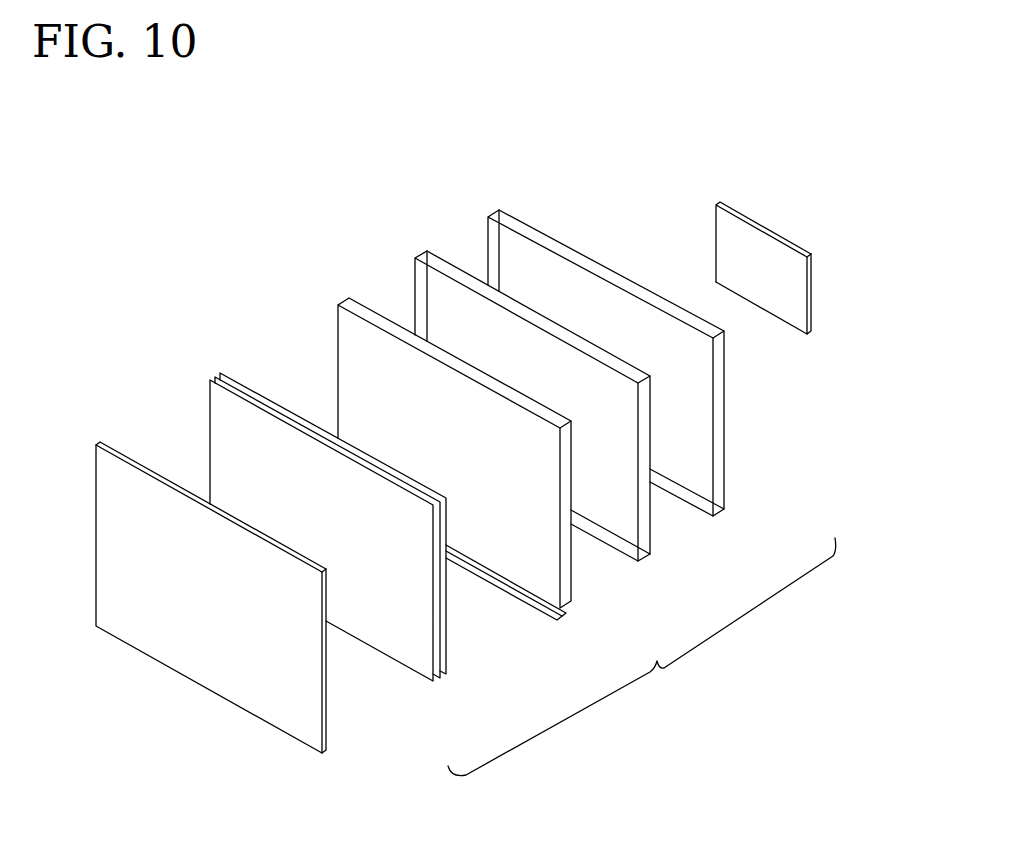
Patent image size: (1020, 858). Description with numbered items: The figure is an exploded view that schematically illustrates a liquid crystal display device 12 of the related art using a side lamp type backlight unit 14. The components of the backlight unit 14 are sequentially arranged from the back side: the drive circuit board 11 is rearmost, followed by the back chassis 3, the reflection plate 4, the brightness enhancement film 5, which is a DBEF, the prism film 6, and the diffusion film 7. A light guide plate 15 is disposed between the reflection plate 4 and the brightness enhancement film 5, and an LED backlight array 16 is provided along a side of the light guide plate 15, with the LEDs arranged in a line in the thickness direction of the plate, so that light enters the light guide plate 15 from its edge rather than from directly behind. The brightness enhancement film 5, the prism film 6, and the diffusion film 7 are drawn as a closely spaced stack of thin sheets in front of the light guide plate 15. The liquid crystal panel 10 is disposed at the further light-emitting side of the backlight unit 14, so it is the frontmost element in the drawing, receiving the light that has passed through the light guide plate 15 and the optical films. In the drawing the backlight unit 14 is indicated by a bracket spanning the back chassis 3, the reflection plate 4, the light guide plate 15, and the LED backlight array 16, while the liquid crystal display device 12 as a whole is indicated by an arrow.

The liquid crystal display device 12 is at (356, 232).
The liquid crystal panel 10 is at (242, 683).
The diffusion film 7 is at (406, 637).
The prism film 6 is at (443, 660).
The brightness enhancement film (DBEF) 5 is at (448, 637).
The LED backlight array 16 is at (563, 618).
The light guide plate 15 is at (570, 547).
The reflection plate 4 is at (648, 505).
The back chassis 3 is at (722, 457).
The drive circuit board 11 is at (779, 298).
The backlight unit 14 is at (642, 657).